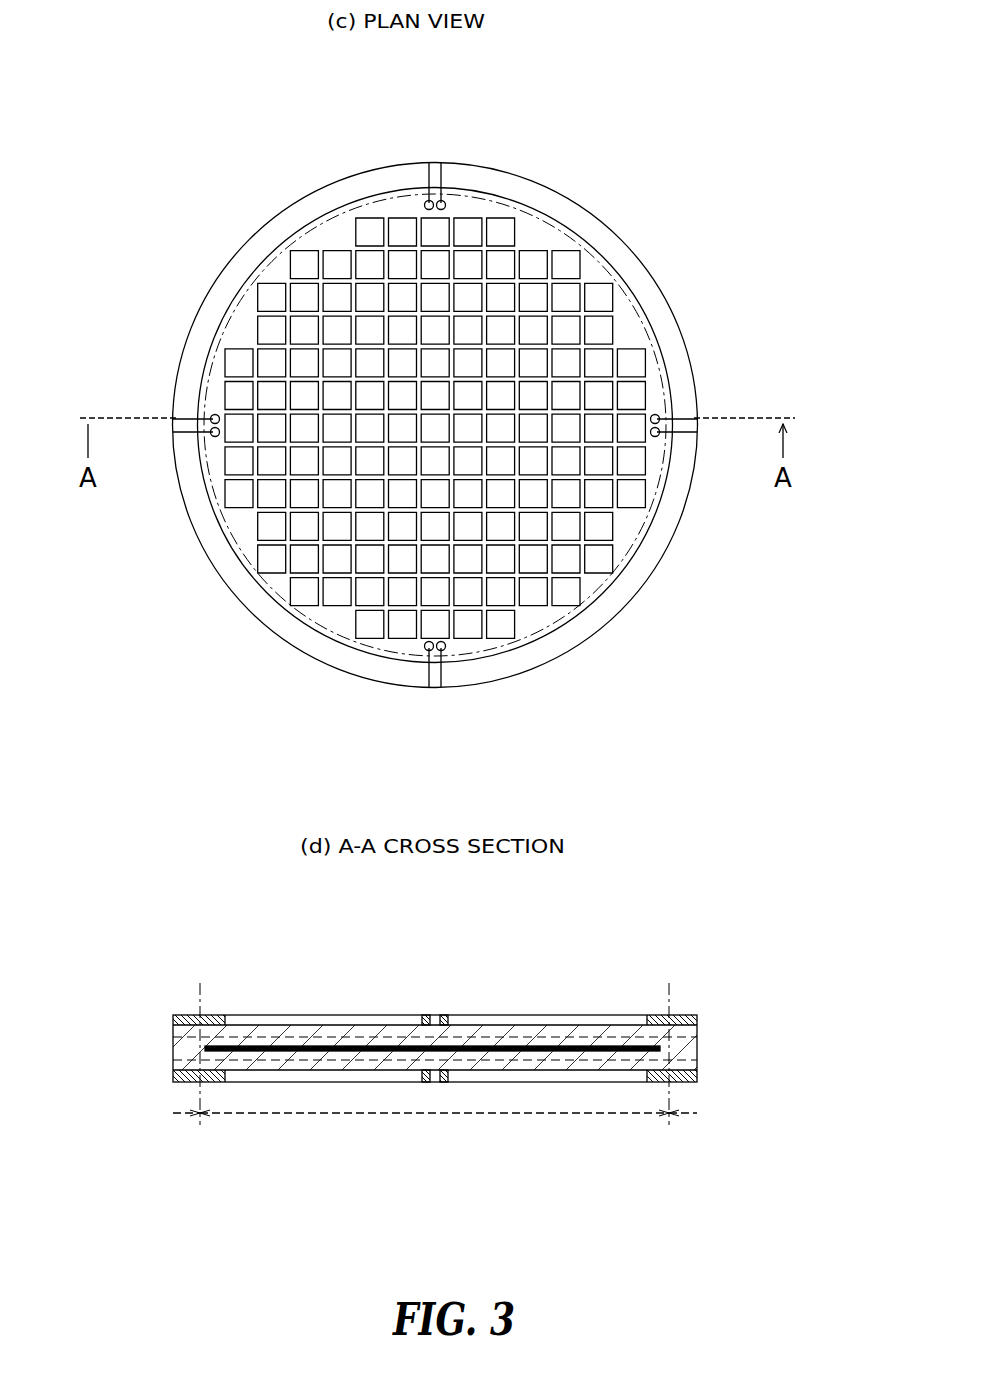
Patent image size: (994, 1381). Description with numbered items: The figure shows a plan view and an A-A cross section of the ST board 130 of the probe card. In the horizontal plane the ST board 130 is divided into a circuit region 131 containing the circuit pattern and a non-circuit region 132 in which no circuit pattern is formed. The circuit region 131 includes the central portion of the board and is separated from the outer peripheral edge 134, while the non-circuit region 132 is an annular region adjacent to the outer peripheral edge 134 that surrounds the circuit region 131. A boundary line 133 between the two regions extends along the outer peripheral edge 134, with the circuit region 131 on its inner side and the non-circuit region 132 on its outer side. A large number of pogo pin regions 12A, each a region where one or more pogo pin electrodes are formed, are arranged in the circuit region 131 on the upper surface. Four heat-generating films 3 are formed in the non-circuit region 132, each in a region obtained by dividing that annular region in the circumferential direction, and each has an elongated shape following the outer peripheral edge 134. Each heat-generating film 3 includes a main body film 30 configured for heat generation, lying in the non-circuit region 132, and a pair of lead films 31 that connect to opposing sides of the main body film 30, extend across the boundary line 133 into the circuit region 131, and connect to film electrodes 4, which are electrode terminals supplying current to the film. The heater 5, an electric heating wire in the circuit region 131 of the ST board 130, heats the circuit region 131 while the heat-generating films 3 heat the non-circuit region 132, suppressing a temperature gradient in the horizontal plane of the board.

The ST board 130 is at (555, 107).
The heat-generating film 3 is at (353, 1015).
The main body film 30 is at (288, 220).
The lead film 31 is at (418, 192).
The film electrode 4 is at (420, 203).
The heater 5 is at (507, 1045).
The pogo pin region 12A is at (268, 330).
The circuit region 131 is at (590, 262).
The non-circuit region 132 is at (660, 320).
The boundary line 133 is at (628, 292).
The outer peripheral edge 134 is at (680, 521).